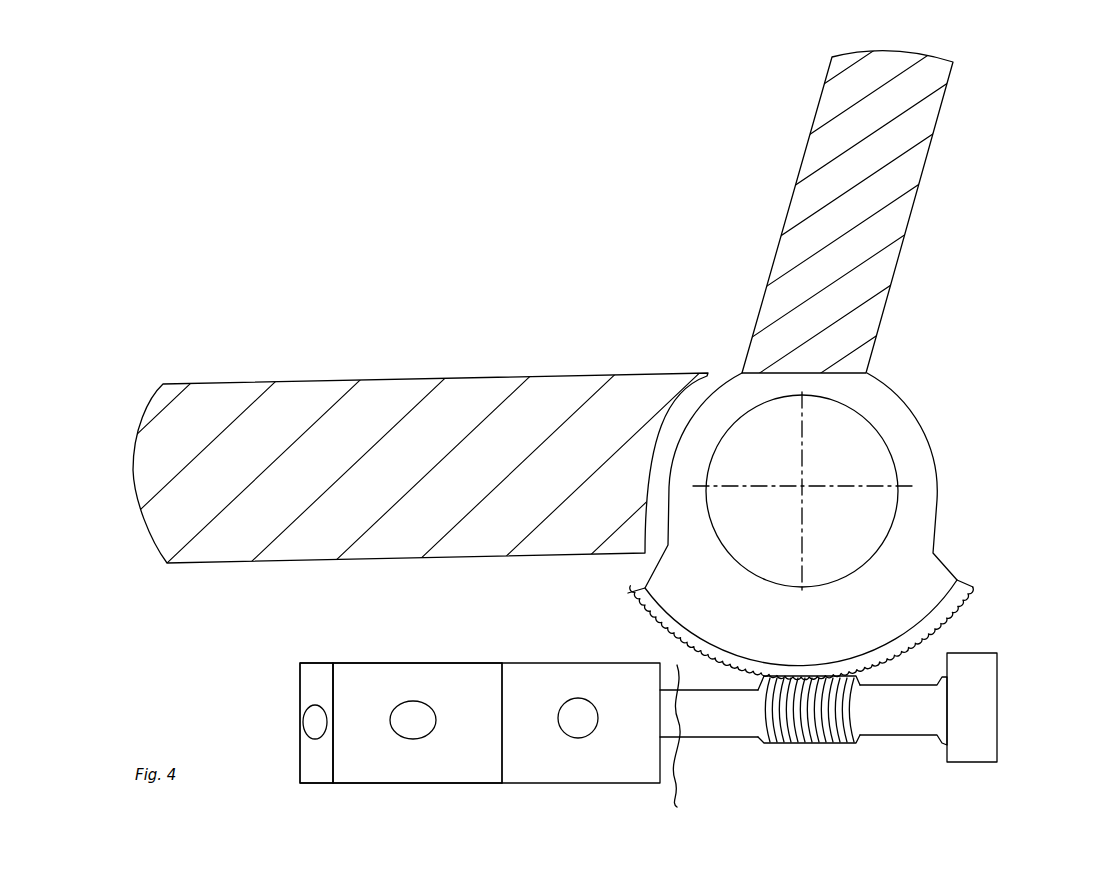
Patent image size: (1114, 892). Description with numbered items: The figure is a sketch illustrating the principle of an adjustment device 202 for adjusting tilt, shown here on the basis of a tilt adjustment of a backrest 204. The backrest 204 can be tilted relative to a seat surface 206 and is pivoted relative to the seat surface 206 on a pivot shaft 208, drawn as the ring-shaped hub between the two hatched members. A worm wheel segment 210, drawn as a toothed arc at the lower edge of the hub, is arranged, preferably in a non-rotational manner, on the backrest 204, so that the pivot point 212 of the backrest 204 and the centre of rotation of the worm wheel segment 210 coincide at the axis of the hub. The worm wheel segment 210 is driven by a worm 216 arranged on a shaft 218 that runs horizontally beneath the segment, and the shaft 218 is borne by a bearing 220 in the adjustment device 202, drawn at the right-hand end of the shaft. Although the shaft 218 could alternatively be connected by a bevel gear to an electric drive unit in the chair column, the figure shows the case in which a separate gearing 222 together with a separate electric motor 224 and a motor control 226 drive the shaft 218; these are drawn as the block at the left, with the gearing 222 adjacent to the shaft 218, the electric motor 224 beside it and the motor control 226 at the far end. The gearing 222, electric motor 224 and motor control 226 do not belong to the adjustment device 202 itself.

The adjustment device 202 is at (818, 781).
The backrest 204 is at (892, 142).
The seat surface 206 is at (320, 412).
The pivot shaft 208 is at (860, 437).
The worm wheel segment 210 is at (983, 600).
The pivot point 212 is at (808, 486).
The worm 216 is at (778, 743).
The shaft 218 is at (703, 728).
The bearing 220 is at (980, 672).
The gearing 222 is at (527, 673).
The electric motor 224 is at (405, 678).
The motor control 226 is at (302, 685).